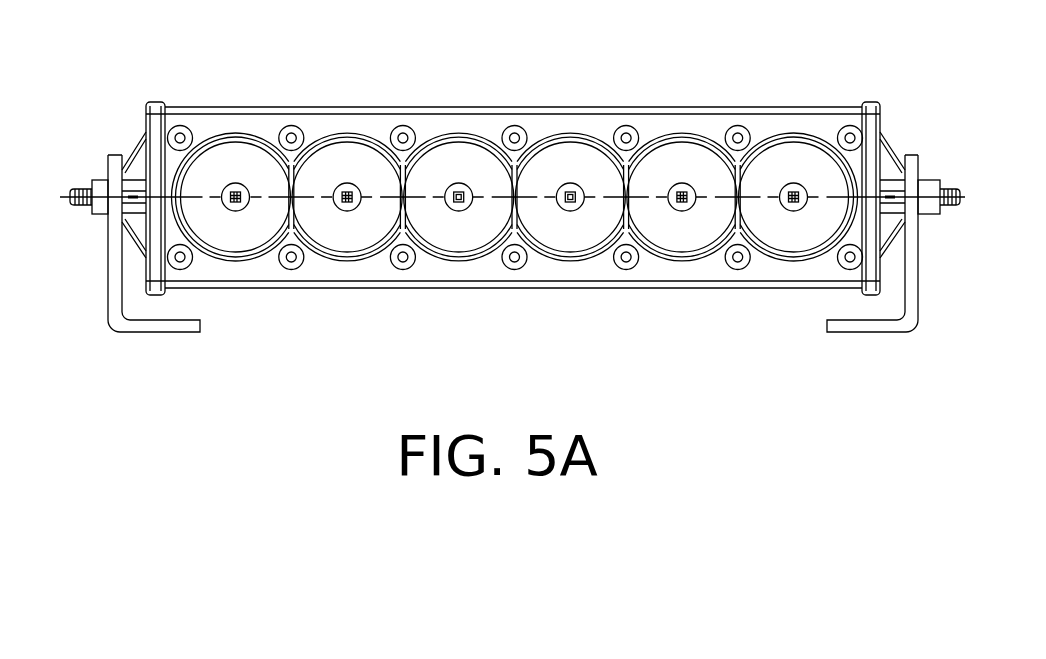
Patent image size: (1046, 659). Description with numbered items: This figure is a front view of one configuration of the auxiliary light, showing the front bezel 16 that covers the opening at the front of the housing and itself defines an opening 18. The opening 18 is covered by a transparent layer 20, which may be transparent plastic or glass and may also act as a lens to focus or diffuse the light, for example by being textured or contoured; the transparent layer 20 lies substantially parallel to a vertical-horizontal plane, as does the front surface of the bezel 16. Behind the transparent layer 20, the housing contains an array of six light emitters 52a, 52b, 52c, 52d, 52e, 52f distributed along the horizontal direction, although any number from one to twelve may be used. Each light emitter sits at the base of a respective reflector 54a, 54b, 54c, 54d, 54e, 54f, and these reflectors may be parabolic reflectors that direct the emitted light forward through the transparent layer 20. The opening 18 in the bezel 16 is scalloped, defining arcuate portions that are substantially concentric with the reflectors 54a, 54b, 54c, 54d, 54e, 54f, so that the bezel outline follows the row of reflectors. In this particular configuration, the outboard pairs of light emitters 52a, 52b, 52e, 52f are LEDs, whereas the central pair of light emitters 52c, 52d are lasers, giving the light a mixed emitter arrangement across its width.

The front bezel 16 is at (212, 124).
The opening 18 is at (272, 137).
The transparent layer 20 is at (208, 220).
The light emitter 52a is at (236, 183).
The light emitter 52b is at (347, 183).
The light emitter 52c is at (459, 183).
The light emitter 52d is at (570, 183).
The light emitter 52e is at (682, 183).
The light emitter 52f is at (794, 183).
The reflector 54a is at (238, 229).
The reflector 54b is at (350, 229).
The reflector 54c is at (462, 229).
The reflector 54d is at (573, 229).
The reflector 54e is at (685, 229).
The reflector 54f is at (796, 229).